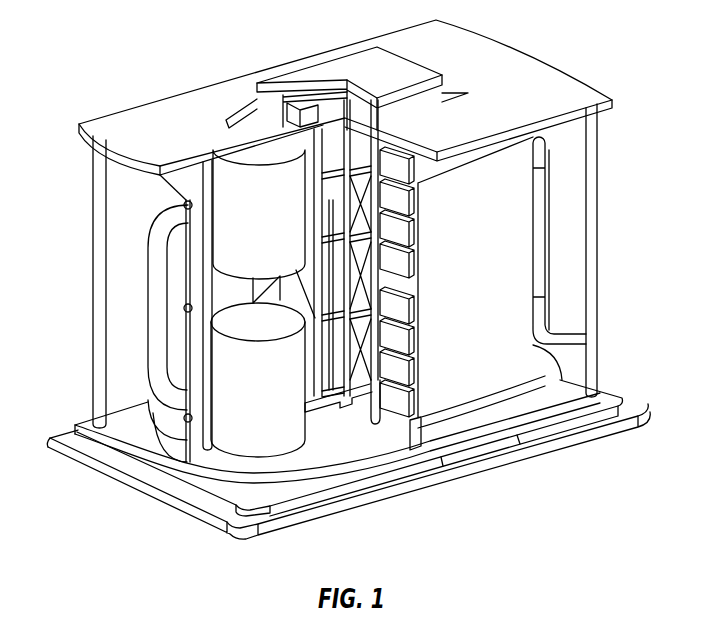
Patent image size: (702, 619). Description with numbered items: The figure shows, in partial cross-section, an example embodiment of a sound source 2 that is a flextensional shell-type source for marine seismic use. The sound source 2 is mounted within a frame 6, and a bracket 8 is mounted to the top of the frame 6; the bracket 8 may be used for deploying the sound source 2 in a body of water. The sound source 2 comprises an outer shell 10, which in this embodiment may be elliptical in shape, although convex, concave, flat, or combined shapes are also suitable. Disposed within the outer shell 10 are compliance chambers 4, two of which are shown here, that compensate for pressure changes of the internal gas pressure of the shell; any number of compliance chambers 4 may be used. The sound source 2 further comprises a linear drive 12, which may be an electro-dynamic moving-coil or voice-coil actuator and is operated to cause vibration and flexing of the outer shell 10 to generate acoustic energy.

The sound source 2 is at (553, 272).
The compliance chamber 4 is at (312, 370).
The frame 6 is at (521, 432).
The bracket 8 is at (373, 70).
The outer shell 10 is at (598, 338).
The linear drive 12 is at (388, 422).